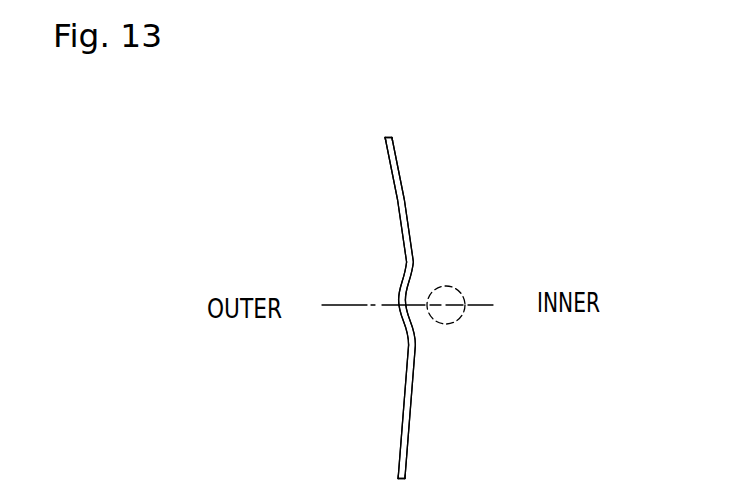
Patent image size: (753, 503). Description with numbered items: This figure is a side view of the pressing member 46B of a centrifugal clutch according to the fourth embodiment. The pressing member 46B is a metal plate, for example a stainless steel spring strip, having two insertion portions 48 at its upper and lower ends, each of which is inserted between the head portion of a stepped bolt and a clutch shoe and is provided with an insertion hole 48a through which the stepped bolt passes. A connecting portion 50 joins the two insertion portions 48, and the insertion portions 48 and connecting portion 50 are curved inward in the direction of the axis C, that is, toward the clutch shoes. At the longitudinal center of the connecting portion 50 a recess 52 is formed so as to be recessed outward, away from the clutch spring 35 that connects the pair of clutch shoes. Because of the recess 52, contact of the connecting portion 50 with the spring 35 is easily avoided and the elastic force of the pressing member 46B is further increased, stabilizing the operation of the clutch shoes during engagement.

The pressing member 46B is at (418, 116).
The insertion portion 48 is at (386, 141).
The insertion hole 48a is at (401, 196).
The connecting portion 50 is at (413, 268).
The recess 52 is at (411, 313).
The clutch spring 35 is at (462, 292).
The axis C is at (337, 303).